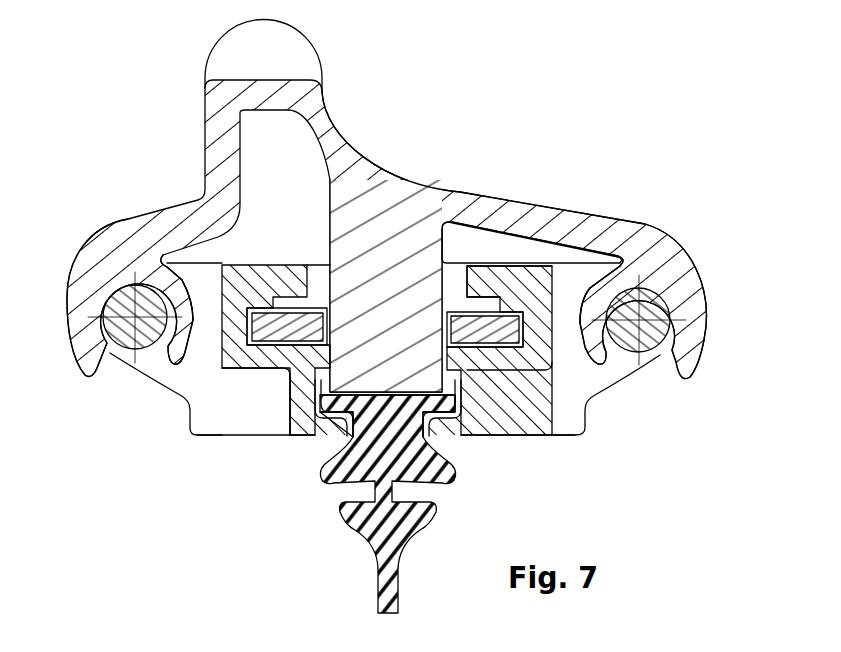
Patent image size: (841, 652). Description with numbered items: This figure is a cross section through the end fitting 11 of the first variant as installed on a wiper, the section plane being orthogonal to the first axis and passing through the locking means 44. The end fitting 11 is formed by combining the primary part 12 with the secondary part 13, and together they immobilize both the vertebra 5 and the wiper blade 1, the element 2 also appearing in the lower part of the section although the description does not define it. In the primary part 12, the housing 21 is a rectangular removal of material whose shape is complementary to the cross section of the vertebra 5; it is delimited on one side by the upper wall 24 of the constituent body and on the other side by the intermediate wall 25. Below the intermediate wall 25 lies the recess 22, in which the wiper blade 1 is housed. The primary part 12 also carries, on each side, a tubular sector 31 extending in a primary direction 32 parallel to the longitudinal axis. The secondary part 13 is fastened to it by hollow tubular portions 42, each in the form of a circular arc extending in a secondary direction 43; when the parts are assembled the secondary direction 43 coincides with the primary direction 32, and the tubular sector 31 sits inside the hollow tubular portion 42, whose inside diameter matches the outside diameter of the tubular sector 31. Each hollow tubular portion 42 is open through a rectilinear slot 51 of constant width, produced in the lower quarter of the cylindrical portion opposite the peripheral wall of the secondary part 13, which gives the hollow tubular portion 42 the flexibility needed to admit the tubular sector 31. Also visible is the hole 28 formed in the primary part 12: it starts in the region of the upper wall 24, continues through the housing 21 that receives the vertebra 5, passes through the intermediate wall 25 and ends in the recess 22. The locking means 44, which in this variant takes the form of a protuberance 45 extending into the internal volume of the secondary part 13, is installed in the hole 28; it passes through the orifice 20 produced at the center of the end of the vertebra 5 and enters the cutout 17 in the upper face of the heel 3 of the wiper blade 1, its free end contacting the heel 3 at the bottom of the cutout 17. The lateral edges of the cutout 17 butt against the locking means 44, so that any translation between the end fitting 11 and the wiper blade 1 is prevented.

The wiper blade 1 is at (390, 320).
The bolt 2 is at (369, 504).
The heel 3 is at (358, 445).
The vertebra 5 is at (262, 322).
The end fitting 11 is at (385, 206).
The primary part 12 is at (403, 329).
The secondary part 13 is at (550, 198).
The cutout 17 is at (290, 372).
The orifice 20 is at (330, 322).
The housing 21 is at (531, 333).
The recess 22 is at (437, 400).
The upper wall 24 is at (485, 283).
The intermediate wall 25 is at (257, 372).
The hole 28 is at (460, 250).
The tubular sector 31 is at (126, 350).
The primary direction 32 is at (385, 298).
The hollow tubular portion 42 is at (194, 269).
The secondary direction 43 is at (128, 300).
The locking means 44 is at (457, 365).
The protuberance 45 is at (381, 332).
The slot 51 is at (147, 358).